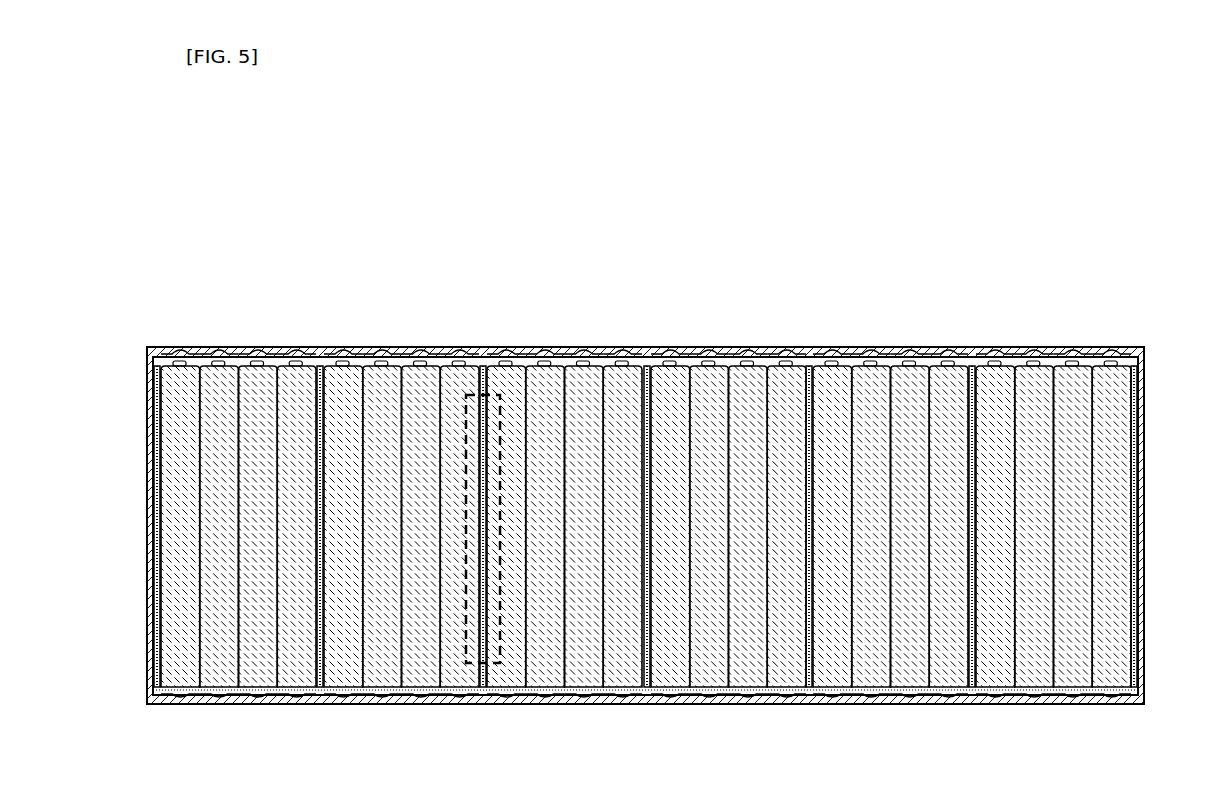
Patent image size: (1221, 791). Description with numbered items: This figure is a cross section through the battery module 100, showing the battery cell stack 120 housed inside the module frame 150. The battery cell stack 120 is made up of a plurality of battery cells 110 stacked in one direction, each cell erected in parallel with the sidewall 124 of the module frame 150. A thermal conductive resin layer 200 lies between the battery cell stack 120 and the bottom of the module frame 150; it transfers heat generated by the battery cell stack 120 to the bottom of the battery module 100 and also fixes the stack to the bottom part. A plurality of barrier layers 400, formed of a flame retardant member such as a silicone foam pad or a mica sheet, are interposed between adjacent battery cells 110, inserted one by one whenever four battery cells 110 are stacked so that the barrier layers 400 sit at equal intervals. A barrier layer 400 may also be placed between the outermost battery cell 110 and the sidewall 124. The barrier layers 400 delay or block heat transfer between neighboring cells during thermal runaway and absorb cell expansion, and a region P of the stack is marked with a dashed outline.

The battery module 100 is at (683, 257).
The battery cell 110 is at (267, 372).
The battery cell stack 120 is at (892, 352).
The sidewall 124 is at (1145, 516).
The module frame 150 is at (1057, 348).
The thermal conductive resin layer 200 is at (217, 704).
The barrier layer 400 is at (158, 365).
The region P is at (500, 635).